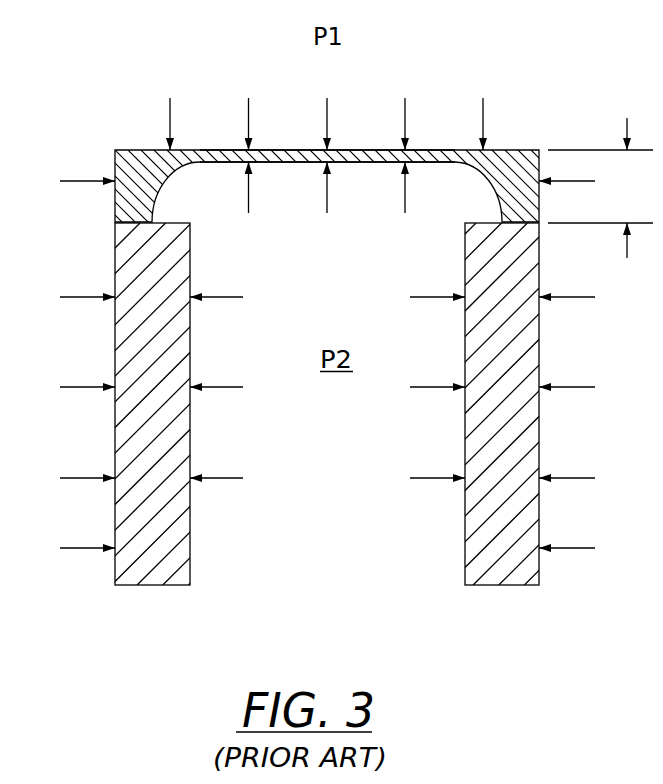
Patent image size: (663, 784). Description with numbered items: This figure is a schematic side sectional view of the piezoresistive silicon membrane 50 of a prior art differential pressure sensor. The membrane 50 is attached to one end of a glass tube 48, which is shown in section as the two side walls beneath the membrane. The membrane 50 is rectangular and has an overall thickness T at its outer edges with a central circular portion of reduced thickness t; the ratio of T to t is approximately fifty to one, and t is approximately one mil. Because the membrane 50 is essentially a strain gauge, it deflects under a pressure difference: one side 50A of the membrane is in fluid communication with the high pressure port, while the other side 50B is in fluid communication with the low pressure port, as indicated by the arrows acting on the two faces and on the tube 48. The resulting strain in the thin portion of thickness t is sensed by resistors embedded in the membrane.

The glass tube 48 is at (145, 443).
The piezoresistive silicon membrane 50 is at (143, 190).
The one side of the membrane 50A is at (360, 150).
The other side of the membrane 50B is at (358, 162).
The reduced thickness t is at (270, 150).
The overall thickness T is at (600, 188).